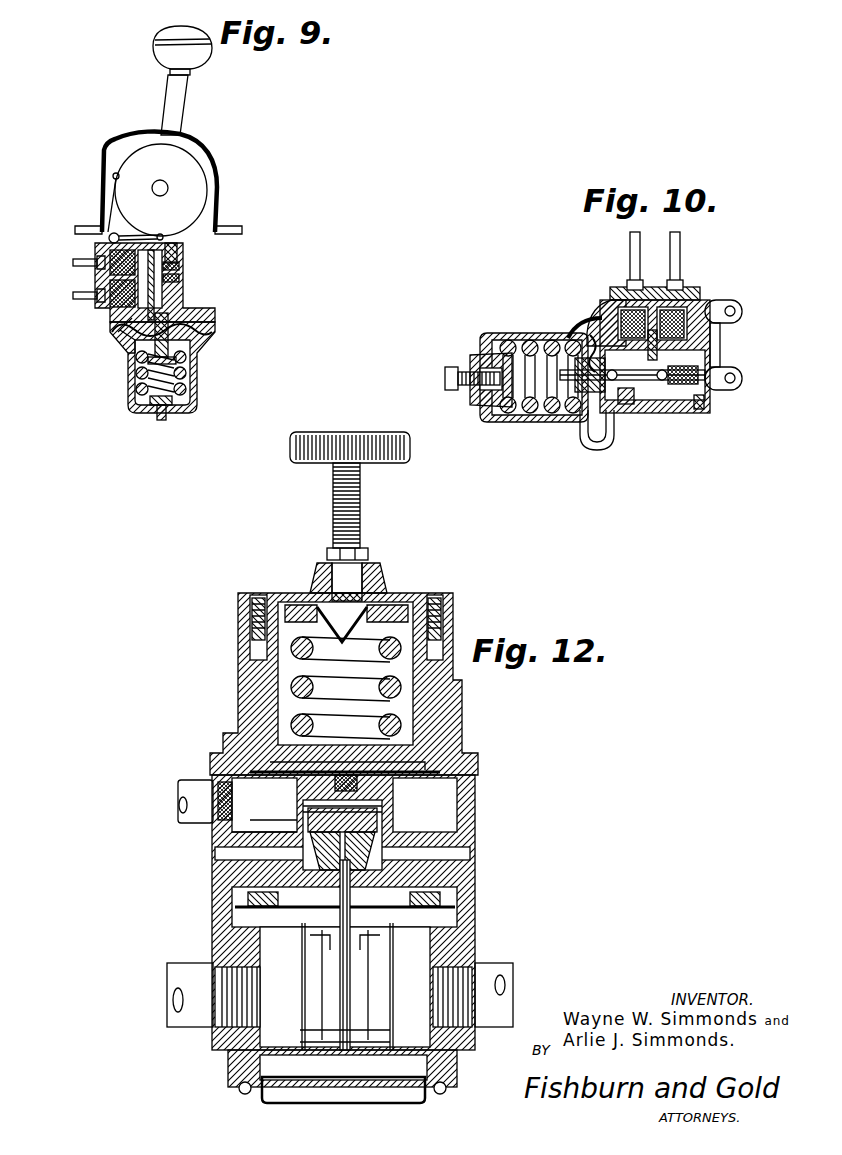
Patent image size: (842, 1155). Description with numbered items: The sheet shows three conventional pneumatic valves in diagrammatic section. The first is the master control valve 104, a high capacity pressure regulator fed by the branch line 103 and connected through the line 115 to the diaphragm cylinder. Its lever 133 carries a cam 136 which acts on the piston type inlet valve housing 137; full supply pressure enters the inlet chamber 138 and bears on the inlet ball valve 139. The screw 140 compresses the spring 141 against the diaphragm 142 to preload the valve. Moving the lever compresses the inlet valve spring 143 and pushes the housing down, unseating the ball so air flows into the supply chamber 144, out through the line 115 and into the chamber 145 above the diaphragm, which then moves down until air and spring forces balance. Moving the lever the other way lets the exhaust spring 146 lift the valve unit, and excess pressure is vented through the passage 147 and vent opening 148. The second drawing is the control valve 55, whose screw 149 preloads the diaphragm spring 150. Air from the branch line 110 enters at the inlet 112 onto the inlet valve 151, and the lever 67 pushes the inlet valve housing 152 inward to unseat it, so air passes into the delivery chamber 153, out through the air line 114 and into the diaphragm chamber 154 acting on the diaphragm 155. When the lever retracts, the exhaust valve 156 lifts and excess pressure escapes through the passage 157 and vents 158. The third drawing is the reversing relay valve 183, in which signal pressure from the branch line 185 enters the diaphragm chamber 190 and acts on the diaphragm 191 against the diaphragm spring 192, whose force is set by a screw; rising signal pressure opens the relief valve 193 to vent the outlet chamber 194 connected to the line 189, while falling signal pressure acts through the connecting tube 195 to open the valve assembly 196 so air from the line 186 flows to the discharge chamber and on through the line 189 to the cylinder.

In FIG. 9, the lever 133 is at (186, 96).
In FIG. 9, the master control valve 104 is at (219, 229).
In FIG. 9, the cam 136 is at (200, 188).
In FIG. 9, the inlet chamber 138 is at (137, 241).
In FIG. 9, the branch line 103 is at (73, 262).
In FIG. 9, the line 115 is at (78, 300).
In FIG. 9, the inlet valve housing 137 is at (182, 247).
In FIG. 9, the inlet valve spring 143 is at (172, 266).
In FIG. 9, the inlet ball valve 139 is at (173, 281).
In FIG. 9, the exhaust spring 146 is at (168, 318).
In FIG. 9, the diaphragm 142 is at (200, 330).
In FIG. 9, the passage 147 is at (185, 341).
In FIG. 9, the spring 141 is at (188, 380).
In FIG. 9, the supply chamber 144 is at (130, 319).
In FIG. 9, the chamber 145 is at (133, 344).
In FIG. 9, the vent opening 148 is at (135, 396).
In FIG. 9, the screw 140 is at (163, 412).
In FIG. 10, the passage 157 is at (568, 378).
In FIG. 10, the vents 158 is at (492, 335).
In FIG. 10, the screw 149 is at (452, 367).
In FIG. 10, the diaphragm spring 150 is at (522, 410).
In FIG. 10, the delivery chamber 153 is at (622, 330).
In FIG. 10, the inlet 112 is at (700, 292).
In FIG. 10, the air line 114 is at (641, 265).
In FIG. 10, the branch line 110 is at (681, 265).
In FIG. 10, the lever 67 is at (716, 364).
In FIG. 10, the inlet valve 151 is at (664, 390).
In FIG. 10, the diaphragm chamber 154 is at (596, 345).
In FIG. 10, the control valve 55 is at (592, 330).
In FIG. 10, the exhaust valve 156 is at (625, 398).
In FIG. 10, the inlet valve housing 152 is at (697, 402).
In FIG. 10, the diaphragm 155 is at (582, 430).
In FIG. 12, the valve assembly 196 is at (361, 544).
In FIG. 12, the reversing relay valve 183 is at (480, 757).
In FIG. 12, the diaphragm spring 192 is at (294, 686).
In FIG. 12, the diaphragm 191 is at (408, 775).
In FIG. 12, the branch line 185 is at (185, 783).
In FIG. 12, the relief valve 193 is at (388, 823).
In FIG. 12, the diaphragm chamber 190 is at (250, 813).
In FIG. 12, the connecting tube 195 is at (342, 908).
In FIG. 12, the line 186 is at (184, 974).
In FIG. 12, the line 189 is at (496, 974).
In FIG. 12, the outlet chamber 194 is at (418, 1039).